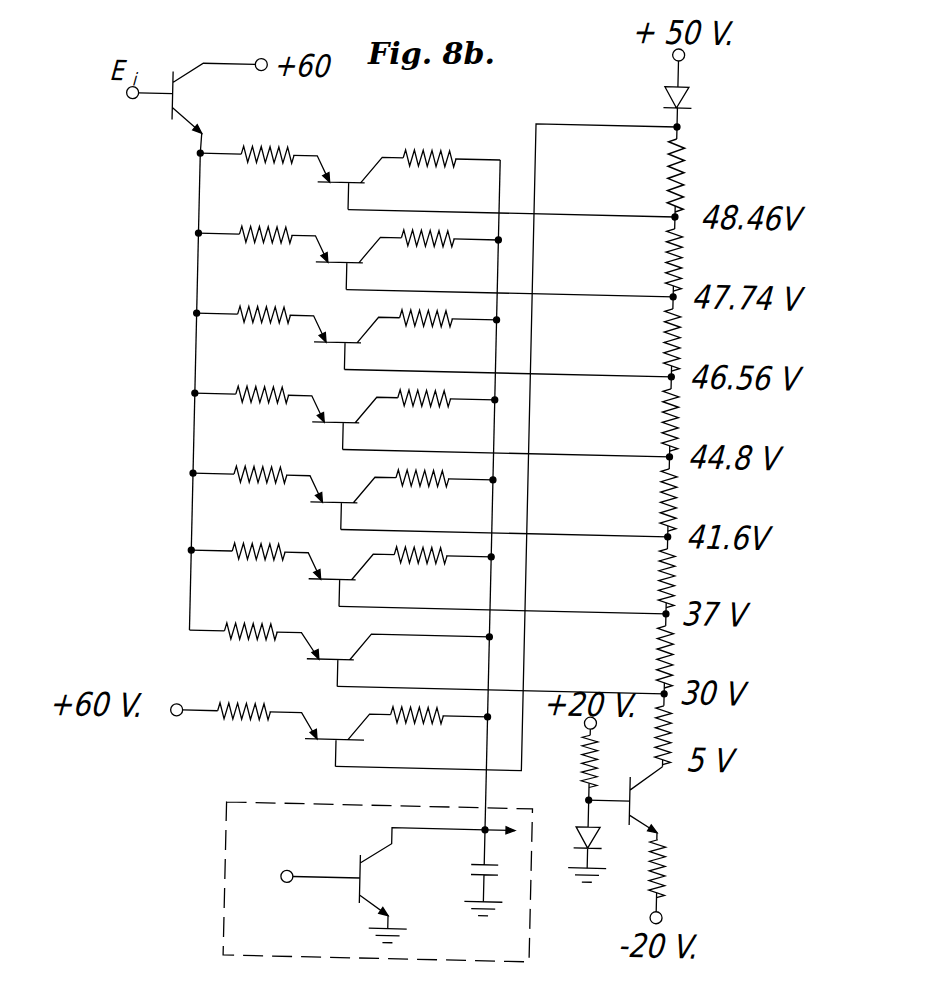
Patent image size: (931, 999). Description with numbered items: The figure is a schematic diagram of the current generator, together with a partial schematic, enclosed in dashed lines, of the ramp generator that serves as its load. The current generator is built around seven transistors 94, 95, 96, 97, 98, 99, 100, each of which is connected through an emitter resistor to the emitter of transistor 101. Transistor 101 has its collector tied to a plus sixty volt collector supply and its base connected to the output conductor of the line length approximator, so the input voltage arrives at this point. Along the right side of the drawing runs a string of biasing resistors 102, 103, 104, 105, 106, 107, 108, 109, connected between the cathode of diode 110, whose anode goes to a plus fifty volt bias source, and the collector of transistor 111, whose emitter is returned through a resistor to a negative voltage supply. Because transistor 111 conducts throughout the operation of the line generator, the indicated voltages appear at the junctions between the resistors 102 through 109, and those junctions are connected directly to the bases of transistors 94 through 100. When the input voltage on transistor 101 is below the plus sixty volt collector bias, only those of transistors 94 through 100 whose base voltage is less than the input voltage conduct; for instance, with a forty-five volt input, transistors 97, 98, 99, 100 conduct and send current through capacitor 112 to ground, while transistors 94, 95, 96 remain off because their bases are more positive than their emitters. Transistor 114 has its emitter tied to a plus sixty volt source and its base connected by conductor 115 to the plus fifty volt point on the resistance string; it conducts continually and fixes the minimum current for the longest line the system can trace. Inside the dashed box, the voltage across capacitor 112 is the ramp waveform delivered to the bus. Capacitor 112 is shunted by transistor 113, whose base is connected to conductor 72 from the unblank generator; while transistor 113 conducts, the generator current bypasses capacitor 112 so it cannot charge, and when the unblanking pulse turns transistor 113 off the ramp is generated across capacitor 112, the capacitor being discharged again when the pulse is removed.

The transistor 101 is at (163, 125).
The transistor 94 is at (366, 192).
The transistor 95 is at (366, 272).
The transistor 96 is at (366, 352).
The transistor 97 is at (366, 432).
The transistor 98 is at (366, 512).
The transistor 99 is at (366, 589).
The transistor 100 is at (366, 669).
The transistor 114 is at (337, 750).
The conductor 115 is at (458, 774).
The conductor 72 is at (320, 898).
The transistor 113 is at (381, 880).
The capacitor 112 is at (513, 881).
The diode 110 is at (684, 97).
The biasing resistor 102 is at (673, 173).
The biasing resistor 103 is at (673, 268).
The biasing resistor 104 is at (673, 335).
The biasing resistor 105 is at (673, 412).
The biasing resistor 106 is at (673, 493).
The biasing resistor 107 is at (673, 573).
The biasing resistor 108 is at (673, 654).
The biasing resistor 109 is at (674, 749).
The transistor 111 is at (646, 815).